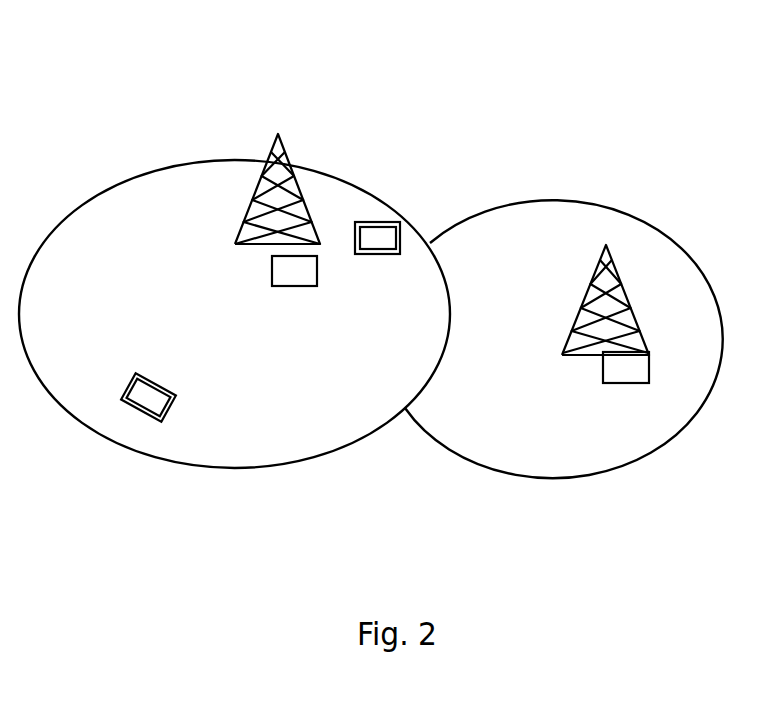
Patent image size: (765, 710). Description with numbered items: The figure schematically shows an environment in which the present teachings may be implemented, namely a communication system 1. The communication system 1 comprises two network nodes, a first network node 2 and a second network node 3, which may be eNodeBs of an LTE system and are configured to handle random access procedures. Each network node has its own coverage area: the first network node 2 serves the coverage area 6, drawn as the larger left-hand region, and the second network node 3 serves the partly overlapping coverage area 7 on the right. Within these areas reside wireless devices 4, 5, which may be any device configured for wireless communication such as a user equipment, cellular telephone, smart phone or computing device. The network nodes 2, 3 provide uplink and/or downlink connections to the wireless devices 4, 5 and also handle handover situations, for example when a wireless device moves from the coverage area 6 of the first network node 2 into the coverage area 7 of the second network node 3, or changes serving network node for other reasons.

The communication system 1 is at (509, 71).
The first network node 2 is at (283, 275).
The second network node 3 is at (615, 370).
The wireless device 4 is at (167, 410).
The wireless device 5 is at (375, 222).
The coverage area 6 is at (292, 438).
The coverage area 7 is at (592, 460).